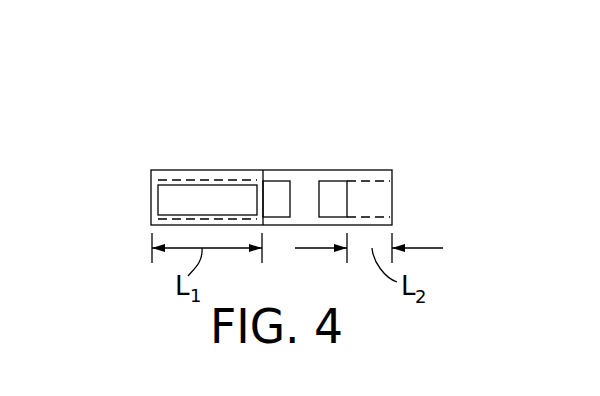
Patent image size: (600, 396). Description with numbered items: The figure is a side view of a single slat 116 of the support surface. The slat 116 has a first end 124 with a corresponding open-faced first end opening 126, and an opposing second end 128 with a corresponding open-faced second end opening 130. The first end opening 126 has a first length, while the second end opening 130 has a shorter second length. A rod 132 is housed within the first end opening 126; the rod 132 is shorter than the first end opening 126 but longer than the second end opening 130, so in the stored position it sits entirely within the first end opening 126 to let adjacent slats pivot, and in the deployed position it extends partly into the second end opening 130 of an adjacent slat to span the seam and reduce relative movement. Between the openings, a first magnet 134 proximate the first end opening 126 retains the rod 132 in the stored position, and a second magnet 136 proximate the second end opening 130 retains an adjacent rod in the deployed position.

The slat 116 is at (337, 97).
The first end 124 is at (150, 159).
The first end opening 126 is at (192, 180).
The second end 128 is at (427, 160).
The second end opening 130 is at (367, 181).
The rod 132 is at (163, 199).
The first magnet 134 is at (274, 192).
The second magnet 136 is at (328, 192).